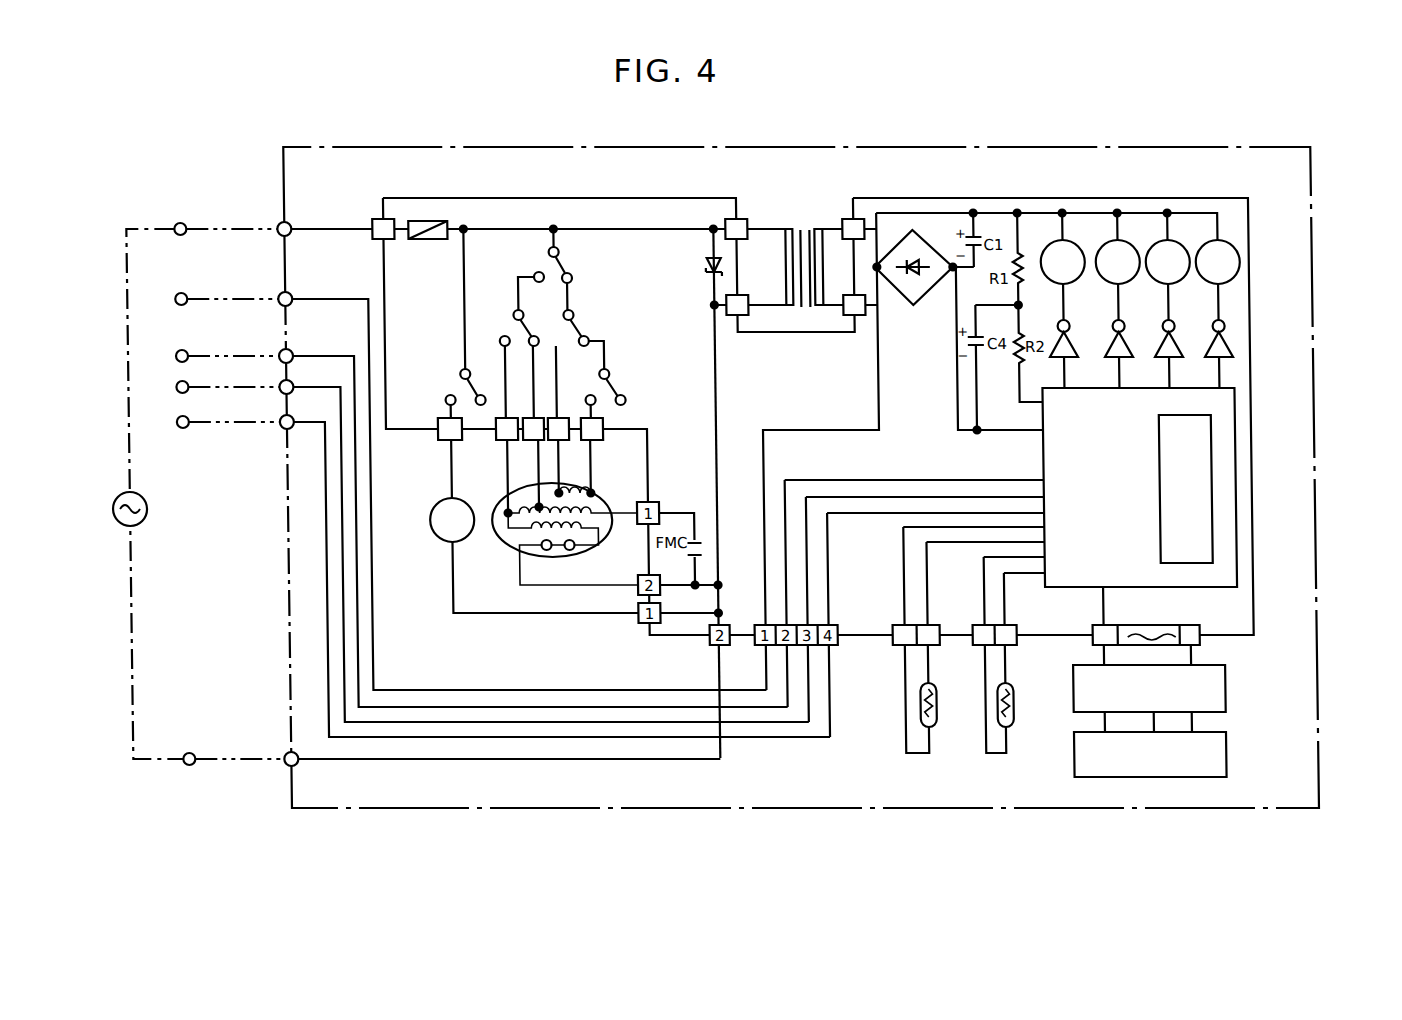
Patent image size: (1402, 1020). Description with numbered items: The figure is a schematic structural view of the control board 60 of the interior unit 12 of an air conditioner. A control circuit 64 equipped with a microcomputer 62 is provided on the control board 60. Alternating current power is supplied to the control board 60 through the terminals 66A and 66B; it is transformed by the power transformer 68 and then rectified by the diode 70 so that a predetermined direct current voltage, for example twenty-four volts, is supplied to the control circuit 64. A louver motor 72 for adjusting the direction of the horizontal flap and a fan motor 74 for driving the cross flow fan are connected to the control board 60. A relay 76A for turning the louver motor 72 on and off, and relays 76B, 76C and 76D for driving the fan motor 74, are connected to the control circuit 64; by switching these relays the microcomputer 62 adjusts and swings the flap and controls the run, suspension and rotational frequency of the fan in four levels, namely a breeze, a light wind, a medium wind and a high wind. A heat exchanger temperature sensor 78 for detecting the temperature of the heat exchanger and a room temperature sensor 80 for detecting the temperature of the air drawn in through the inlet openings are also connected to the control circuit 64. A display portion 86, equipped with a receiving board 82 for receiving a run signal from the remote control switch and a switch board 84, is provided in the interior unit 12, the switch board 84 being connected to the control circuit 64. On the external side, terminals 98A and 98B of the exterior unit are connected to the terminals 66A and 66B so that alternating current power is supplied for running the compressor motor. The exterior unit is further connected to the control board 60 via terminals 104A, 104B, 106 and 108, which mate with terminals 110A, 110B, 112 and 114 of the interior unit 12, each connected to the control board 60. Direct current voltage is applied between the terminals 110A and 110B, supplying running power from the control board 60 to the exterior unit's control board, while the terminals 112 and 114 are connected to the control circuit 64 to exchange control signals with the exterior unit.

The interior unit 12 is at (1020, 146).
The control board 60 is at (655, 198).
The microcomputer 62 is at (1211, 495).
The control circuit 64 is at (1235, 405).
The terminal 66A is at (292, 223).
The terminal 66B is at (292, 765).
The power transformer 68 is at (812, 193).
The diode 70 is at (927, 227).
The louver motor 72 is at (438, 498).
The fan motor 74 is at (601, 488).
The relay 76A is at (1227, 243).
The relay 76B is at (1056, 243).
The relay 76C is at (1112, 243).
The relay 76D is at (1164, 243).
The heat exchanger temperature sensor 78 is at (934, 712).
The room temperature sensor 80 is at (1011, 712).
The receiving board 82 is at (1180, 754).
The switch board 84 is at (1222, 692).
The display portion 86 is at (1222, 682).
The terminal 98A is at (187, 224).
The terminal 98B is at (190, 753).
The terminal 104A is at (188, 294).
The terminal 104B is at (180, 428).
The terminal 106 is at (188, 351).
The terminal 108 is at (188, 392).
The terminal 110A is at (292, 293).
The terminal 110B is at (284, 429).
The terminal 112 is at (292, 350).
The terminal 114 is at (292, 381).